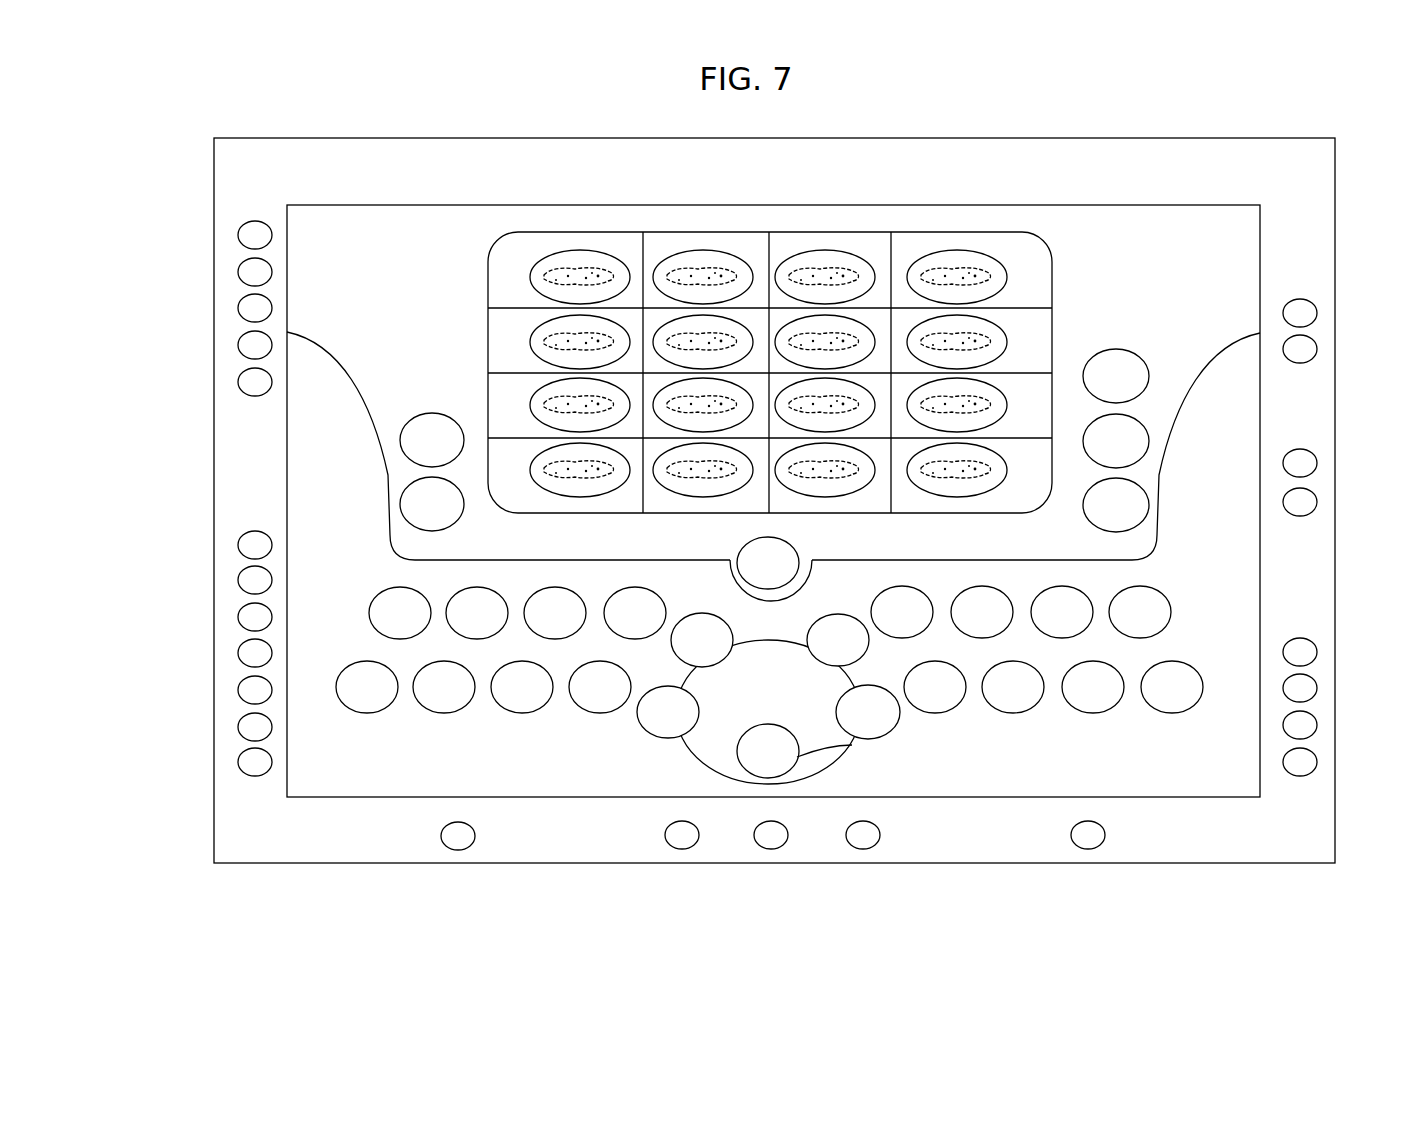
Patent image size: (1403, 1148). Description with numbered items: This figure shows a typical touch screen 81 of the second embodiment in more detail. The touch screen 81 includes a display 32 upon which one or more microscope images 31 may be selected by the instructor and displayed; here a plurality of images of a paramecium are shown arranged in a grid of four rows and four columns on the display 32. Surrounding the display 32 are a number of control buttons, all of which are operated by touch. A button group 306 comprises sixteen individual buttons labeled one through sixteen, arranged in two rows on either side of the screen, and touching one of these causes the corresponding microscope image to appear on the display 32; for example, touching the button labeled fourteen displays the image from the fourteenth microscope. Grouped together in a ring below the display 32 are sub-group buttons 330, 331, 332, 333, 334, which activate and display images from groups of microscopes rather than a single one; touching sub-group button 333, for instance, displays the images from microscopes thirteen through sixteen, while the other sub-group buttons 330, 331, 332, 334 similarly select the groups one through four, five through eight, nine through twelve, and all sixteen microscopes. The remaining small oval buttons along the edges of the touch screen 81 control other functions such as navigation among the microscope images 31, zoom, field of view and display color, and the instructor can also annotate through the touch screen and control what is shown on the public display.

The touch screen 81 is at (1219, 112).
The display 32 is at (528, 228).
The microscope images 31 is at (665, 238).
The button group 306 is at (356, 594).
The sub-group button 330 is at (702, 667).
The sub-group button 331 is at (649, 736).
The sub-group button 332 is at (837, 615).
The sub-group button 333 is at (900, 722).
The sub-group button 334 is at (850, 744).